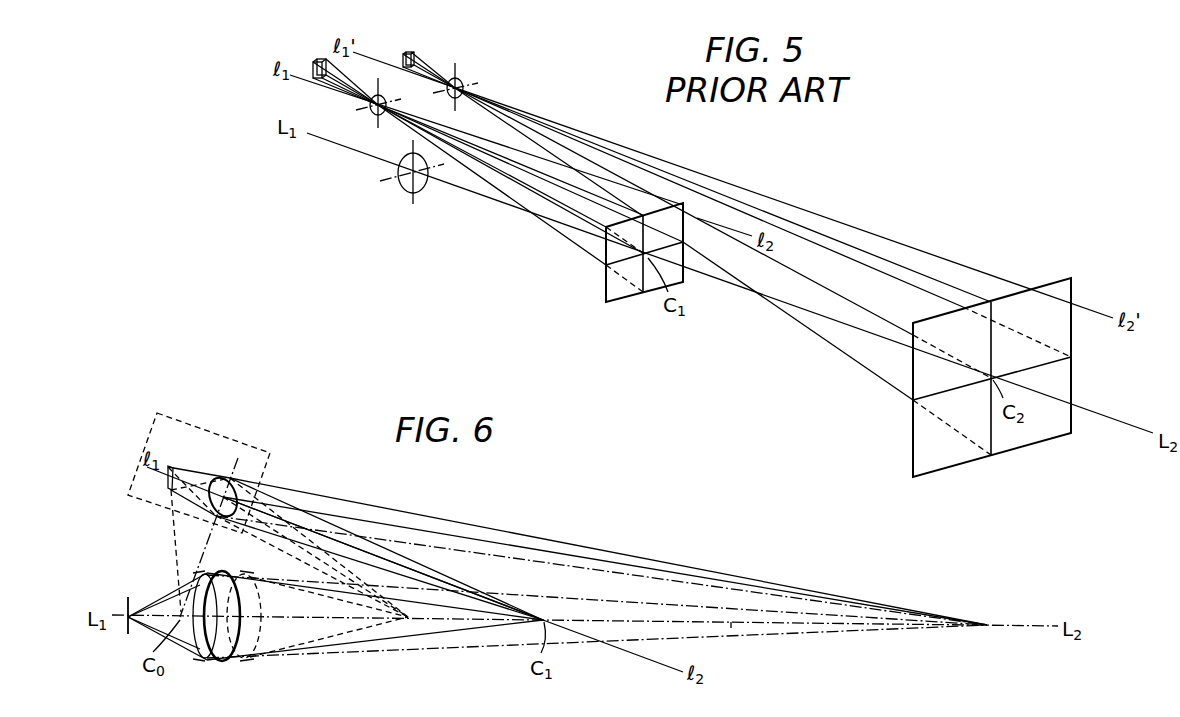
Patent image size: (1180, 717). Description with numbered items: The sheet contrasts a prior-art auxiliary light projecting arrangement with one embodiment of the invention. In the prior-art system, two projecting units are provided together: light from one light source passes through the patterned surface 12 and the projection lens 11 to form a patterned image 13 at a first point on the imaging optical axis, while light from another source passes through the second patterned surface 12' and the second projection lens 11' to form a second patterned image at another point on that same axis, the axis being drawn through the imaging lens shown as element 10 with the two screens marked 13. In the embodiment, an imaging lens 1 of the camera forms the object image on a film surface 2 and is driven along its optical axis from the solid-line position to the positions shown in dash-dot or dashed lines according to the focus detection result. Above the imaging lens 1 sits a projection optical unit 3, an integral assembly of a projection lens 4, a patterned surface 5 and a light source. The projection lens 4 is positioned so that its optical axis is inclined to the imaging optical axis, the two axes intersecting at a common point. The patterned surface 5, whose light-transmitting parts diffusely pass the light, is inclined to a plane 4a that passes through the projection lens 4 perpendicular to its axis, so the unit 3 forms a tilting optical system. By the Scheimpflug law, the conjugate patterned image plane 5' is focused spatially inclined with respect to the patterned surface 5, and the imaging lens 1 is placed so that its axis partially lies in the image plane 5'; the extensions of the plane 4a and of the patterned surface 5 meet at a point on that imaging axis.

In FIG. 5, the objective lens 10 is at (410, 195).
In FIG. 5, the projection lens 11 is at (369, 110).
In FIG. 5, the projection lens 11' is at (468, 77).
In FIG. 5, the patterned surface 12 is at (485, 148).
In FIG. 5, the patterned surface 12' is at (691, 208).
In FIG. 5, the patterned image 13 is at (620, 288).
In FIG. 6, the imaging lens 1 is at (222, 662).
In FIG. 6, the film surface 2 is at (127, 631).
In FIG. 6, the projection optical unit 3 is at (208, 428).
In FIG. 6, the projection lens 4 is at (236, 480).
In FIG. 6, the plane 4a is at (238, 458).
In FIG. 6, the patterned surface 5 is at (181, 539).
In FIG. 6, the patterned image plane 5' is at (739, 647).